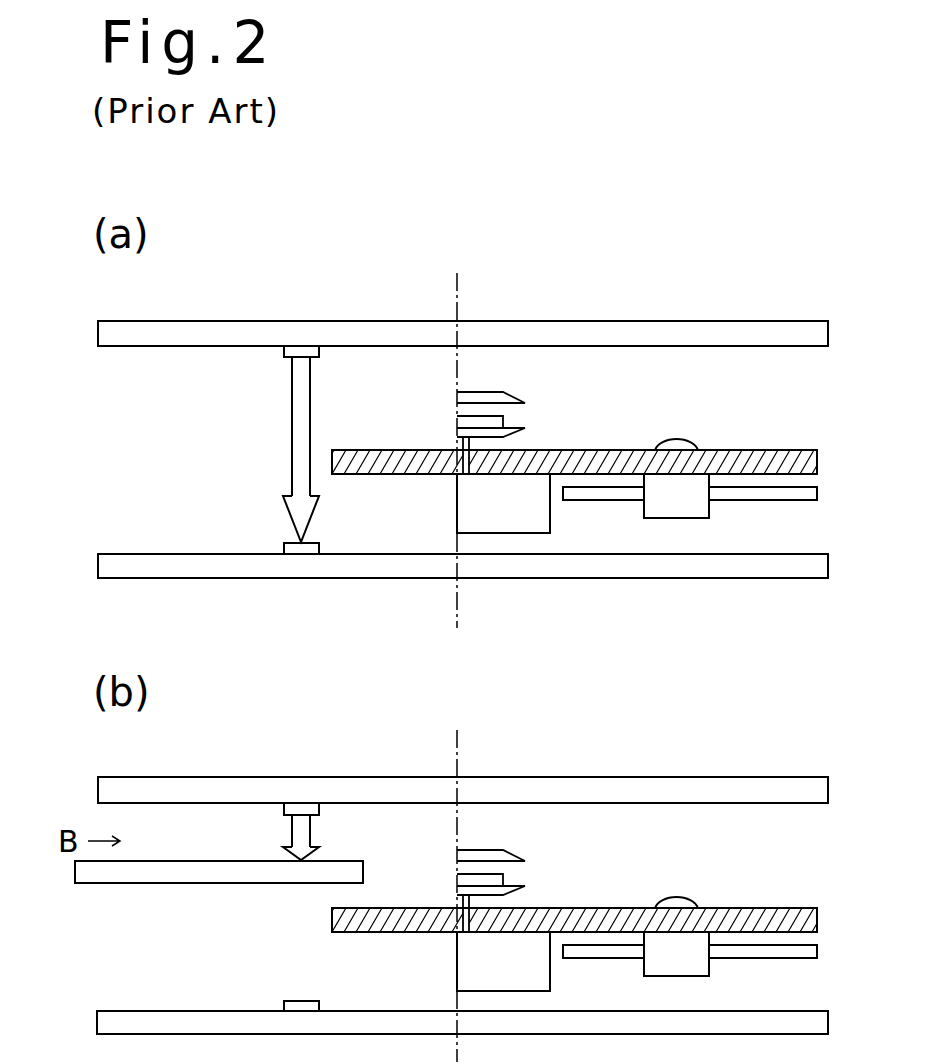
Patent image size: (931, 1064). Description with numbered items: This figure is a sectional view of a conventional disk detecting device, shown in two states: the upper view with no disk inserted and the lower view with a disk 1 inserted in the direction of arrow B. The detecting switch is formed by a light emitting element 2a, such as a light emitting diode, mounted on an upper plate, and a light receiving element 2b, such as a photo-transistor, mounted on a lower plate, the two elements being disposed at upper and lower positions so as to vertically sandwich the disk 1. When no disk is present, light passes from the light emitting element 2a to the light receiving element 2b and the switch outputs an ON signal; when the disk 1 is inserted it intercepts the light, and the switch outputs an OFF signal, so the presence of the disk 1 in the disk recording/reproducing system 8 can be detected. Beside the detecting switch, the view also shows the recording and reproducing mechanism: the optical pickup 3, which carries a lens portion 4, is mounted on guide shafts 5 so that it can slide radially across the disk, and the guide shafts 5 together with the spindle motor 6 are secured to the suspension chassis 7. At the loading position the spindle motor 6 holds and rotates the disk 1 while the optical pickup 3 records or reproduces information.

The disk 1 is at (145, 874).
The light emitting element 2a is at (312, 346).
The light receiving element 2b is at (283, 543).
The optical pickup 3 is at (710, 506).
The lens portion 4 is at (690, 437).
The guide shafts 5 is at (768, 501).
The spindle motor 6 is at (533, 510).
The suspension chassis 7 is at (540, 450).
The disk recording/reproducing system 8 is at (470, 333).